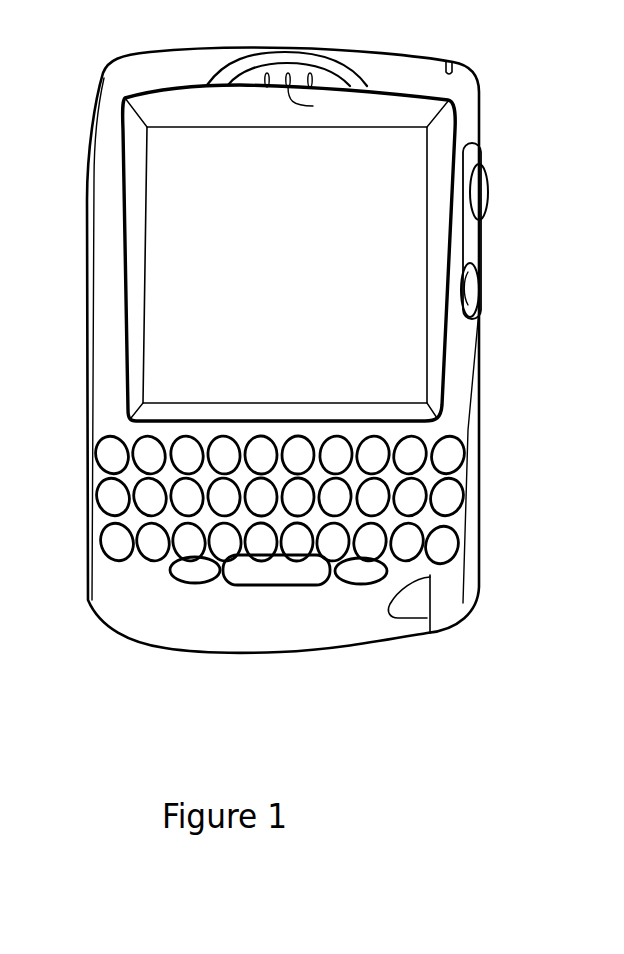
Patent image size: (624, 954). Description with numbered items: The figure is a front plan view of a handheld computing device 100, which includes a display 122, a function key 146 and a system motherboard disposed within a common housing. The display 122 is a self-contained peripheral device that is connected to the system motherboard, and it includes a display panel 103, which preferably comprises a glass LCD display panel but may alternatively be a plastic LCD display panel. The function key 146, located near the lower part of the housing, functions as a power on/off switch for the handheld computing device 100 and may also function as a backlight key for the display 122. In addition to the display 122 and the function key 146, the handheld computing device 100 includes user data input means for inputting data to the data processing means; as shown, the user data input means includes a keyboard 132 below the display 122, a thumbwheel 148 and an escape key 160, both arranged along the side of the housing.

The handheld computing device 100 is at (76, 86).
The display panel 103 is at (300, 273).
The display 122 is at (427, 357).
The keyboard 132 is at (497, 433).
The function key 146 is at (403, 618).
The thumbwheel 148 is at (488, 187).
The escape key 160 is at (472, 280).